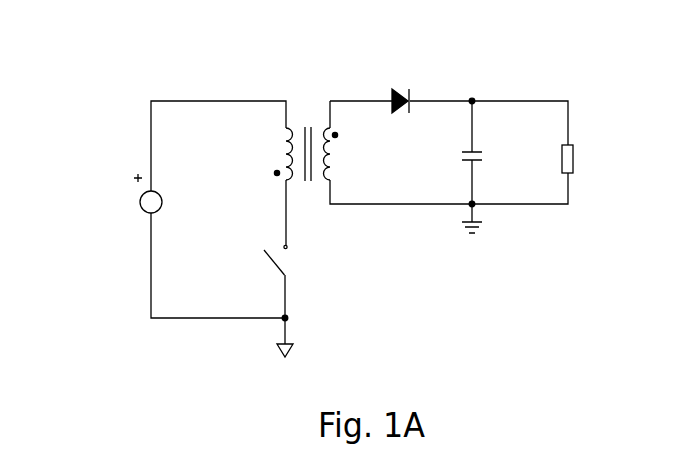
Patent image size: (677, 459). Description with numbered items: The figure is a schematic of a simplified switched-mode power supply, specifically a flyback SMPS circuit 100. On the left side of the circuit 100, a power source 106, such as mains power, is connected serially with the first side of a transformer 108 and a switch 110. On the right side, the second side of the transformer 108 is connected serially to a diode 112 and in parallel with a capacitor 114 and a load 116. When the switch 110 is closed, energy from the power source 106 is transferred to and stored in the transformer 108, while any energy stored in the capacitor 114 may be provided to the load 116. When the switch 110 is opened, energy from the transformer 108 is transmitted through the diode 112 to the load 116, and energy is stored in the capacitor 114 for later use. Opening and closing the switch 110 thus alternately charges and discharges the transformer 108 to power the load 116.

The circuit 100 is at (360, 195).
The power source 106 is at (136, 199).
The transformer 108 is at (307, 125).
The switch 110 is at (288, 255).
The diode 112 is at (397, 82).
The capacitor 114 is at (480, 156).
The load 116 is at (574, 163).